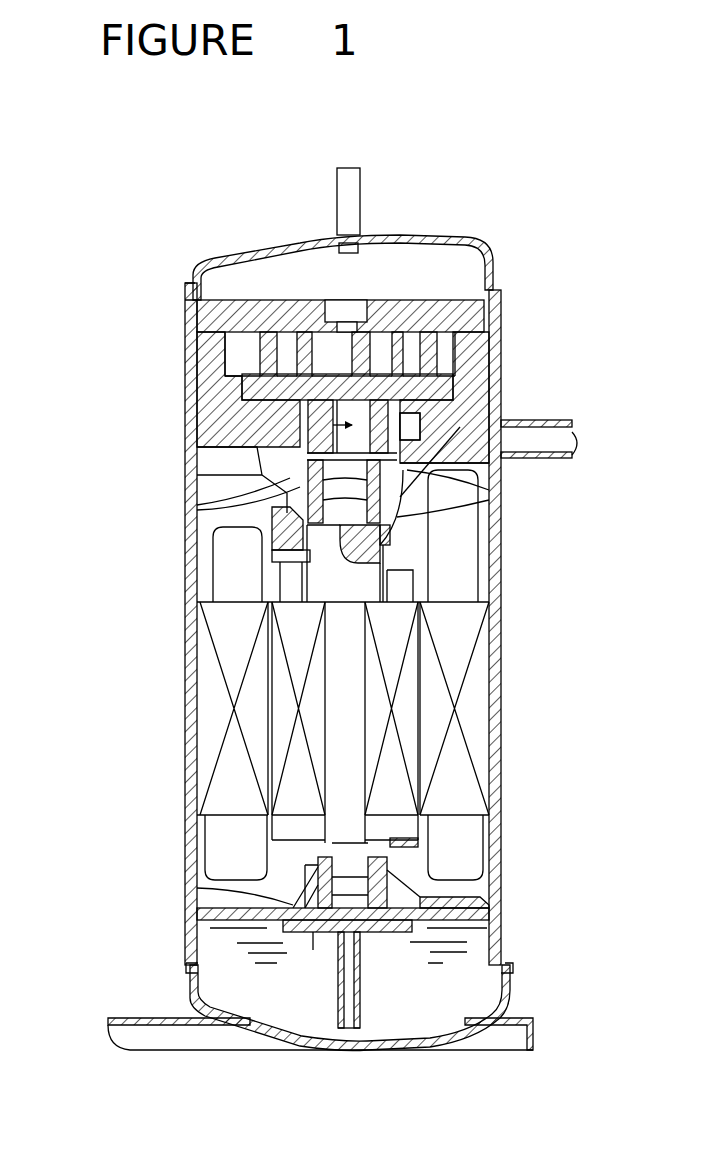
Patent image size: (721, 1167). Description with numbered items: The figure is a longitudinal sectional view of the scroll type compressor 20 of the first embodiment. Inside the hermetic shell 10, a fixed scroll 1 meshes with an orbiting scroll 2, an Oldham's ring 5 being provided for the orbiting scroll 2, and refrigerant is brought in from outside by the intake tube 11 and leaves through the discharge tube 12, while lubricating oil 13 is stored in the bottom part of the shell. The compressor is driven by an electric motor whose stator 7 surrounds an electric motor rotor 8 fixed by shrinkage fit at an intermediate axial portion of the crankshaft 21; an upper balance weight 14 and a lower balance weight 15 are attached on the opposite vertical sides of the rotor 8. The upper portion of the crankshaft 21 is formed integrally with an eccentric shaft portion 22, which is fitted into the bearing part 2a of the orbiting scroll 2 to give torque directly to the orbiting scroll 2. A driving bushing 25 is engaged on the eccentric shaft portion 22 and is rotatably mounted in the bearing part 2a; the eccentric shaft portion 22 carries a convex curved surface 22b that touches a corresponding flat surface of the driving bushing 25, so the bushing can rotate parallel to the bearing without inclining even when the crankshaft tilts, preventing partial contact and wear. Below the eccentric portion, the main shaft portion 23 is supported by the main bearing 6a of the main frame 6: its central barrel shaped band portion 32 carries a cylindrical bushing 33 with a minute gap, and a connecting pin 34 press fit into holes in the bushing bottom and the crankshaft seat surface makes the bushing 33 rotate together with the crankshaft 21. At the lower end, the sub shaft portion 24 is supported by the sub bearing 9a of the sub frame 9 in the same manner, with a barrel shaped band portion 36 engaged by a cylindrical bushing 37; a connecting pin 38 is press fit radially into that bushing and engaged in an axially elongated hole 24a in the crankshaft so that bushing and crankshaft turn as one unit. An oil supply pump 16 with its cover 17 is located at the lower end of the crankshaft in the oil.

The fixed scroll 1 is at (413, 298).
The orbiting scroll 2 is at (460, 375).
The bearing part 2a is at (480, 420).
The Oldham's ring 5 is at (455, 413).
The main frame 6 is at (215, 423).
The main bearing 6a is at (460, 503).
The electric motor stator 7 is at (485, 690).
The electric motor rotor 8 is at (405, 722).
The sub frame 9 is at (490, 908).
The sub bearing 9a is at (290, 880).
The hermetic shell 10 is at (195, 645).
The intake tube 11 is at (535, 457).
The discharge tube 12 is at (360, 205).
The lubricating oil 13 is at (217, 945).
The upper balance weight 14 is at (280, 528).
The lower balance weight 15 is at (375, 847).
The oil supply pump 16 is at (300, 908).
The cover 17 is at (383, 933).
The scroll type compressor 20 is at (212, 242).
The crankshaft 21 is at (343, 574).
The eccentric shaft portion 22 is at (300, 440).
The curved surface 22b is at (455, 340).
The main shaft portion 23 is at (380, 542).
The sub shaft portion 24 is at (342, 856).
The elongated hole 24a is at (313, 925).
The driving bushing 25 is at (320, 420).
The barrel shaped band portion 32 is at (445, 495).
The cylindrical bushing 33 is at (320, 478).
The connecting pin 34 is at (385, 565).
The barrel shaped band portion 36 is at (310, 875).
The cylindrical bushing 37 is at (395, 882).
The connecting pin 38 is at (425, 898).